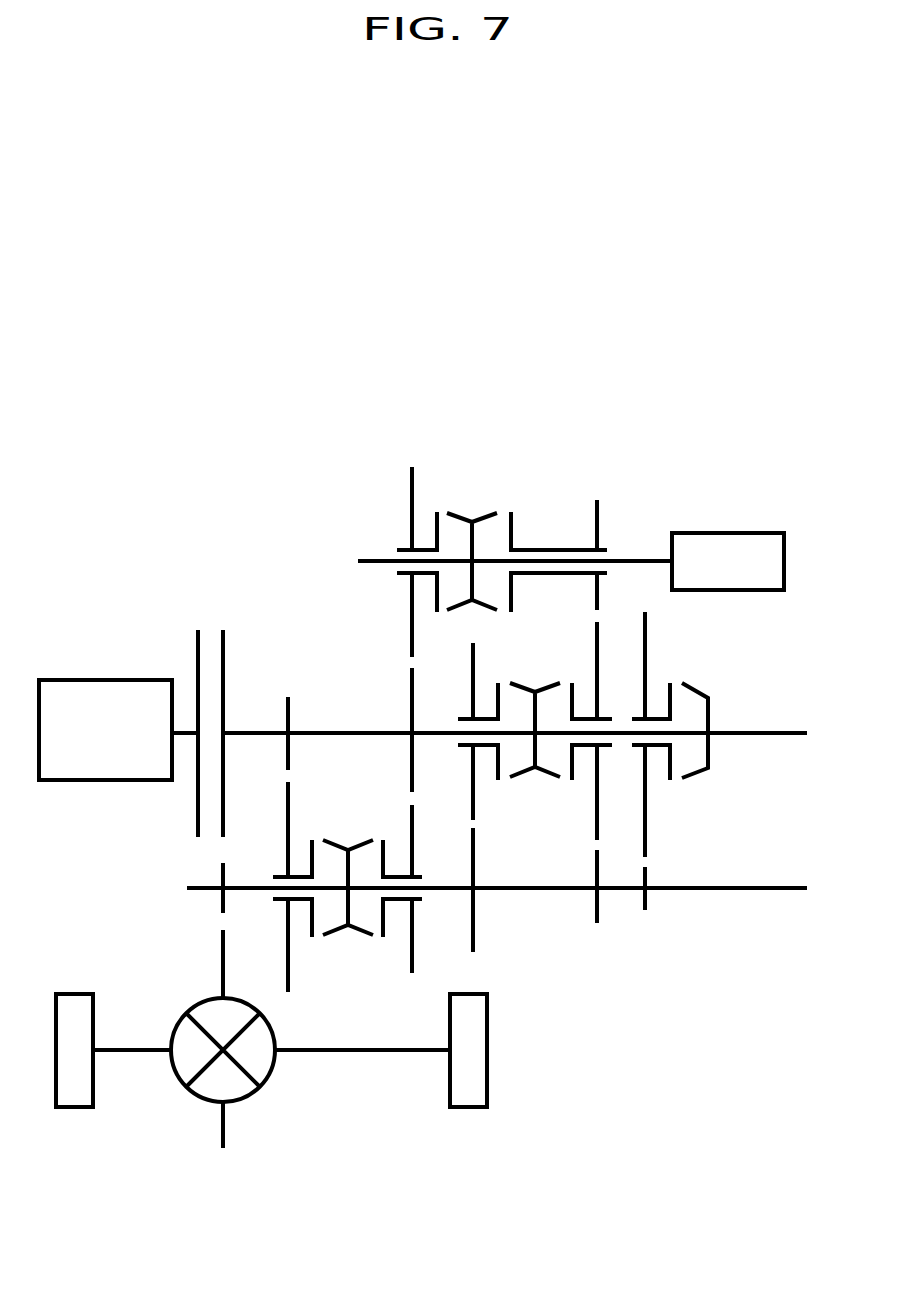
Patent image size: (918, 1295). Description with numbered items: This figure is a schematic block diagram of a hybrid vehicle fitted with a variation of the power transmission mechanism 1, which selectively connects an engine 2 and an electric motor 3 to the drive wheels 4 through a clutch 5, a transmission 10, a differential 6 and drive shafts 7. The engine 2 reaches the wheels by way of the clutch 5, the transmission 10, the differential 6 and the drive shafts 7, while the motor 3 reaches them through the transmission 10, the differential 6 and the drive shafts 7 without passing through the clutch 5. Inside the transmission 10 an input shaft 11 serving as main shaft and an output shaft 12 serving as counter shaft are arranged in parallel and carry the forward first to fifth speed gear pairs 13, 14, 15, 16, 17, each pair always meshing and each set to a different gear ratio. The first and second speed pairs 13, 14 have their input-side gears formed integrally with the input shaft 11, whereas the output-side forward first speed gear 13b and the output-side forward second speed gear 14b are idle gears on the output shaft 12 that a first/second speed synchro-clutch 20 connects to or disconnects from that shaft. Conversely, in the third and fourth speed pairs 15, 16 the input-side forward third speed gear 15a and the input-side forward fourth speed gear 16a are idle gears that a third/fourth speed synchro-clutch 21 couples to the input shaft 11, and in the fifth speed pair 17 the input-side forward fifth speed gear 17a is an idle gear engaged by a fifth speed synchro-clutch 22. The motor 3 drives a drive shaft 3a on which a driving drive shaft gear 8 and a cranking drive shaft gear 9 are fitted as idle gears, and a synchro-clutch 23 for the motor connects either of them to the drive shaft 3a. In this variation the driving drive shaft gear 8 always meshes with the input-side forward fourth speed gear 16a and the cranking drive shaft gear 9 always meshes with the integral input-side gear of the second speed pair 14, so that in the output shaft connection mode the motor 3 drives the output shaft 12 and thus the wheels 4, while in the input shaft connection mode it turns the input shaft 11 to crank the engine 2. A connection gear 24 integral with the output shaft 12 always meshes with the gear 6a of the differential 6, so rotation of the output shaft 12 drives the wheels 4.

The power transmission mechanism 1 is at (527, 285).
The engine 2 is at (100, 680).
The electric motor 3 is at (718, 533).
The drive shaft 3a is at (622, 557).
The drive wheels 4 is at (73, 1109).
The clutch 5 is at (222, 632).
The differential 6 is at (248, 1097).
The gear of the differential 6a is at (220, 970).
The drive shafts 7 is at (123, 1053).
The driving drive shaft gear 8 is at (598, 500).
The cranking drive shaft gear 9 is at (410, 485).
The transmission 10 is at (574, 1095).
The input shaft 11 is at (790, 727).
The output shaft 12 is at (765, 885).
The forward first speed gear pair 13 is at (288, 697).
The output-side forward first speed gear 13b is at (288, 840).
The forward second speed gear pair 14 is at (411, 680).
The output-side forward second speed gear 14b is at (410, 822).
The forward third speed gear pair 15 is at (475, 916).
The input-side forward third speed gear 15a is at (475, 682).
The forward fourth speed gear pair 16 is at (600, 912).
The input-side forward fourth speed gear 16a is at (596, 652).
The forward fifth speed gear pair 17 is at (648, 896).
The input-side forward fifth speed gear 17a is at (648, 657).
The first/second speed synchro-clutch 20 is at (360, 935).
The third/fourth speed synchro-clutch 21 is at (540, 786).
The fifth speed synchro-clutch 22 is at (697, 779).
The synchro-clutch for the motor 23 is at (490, 520).
The connection gear 24 is at (218, 903).